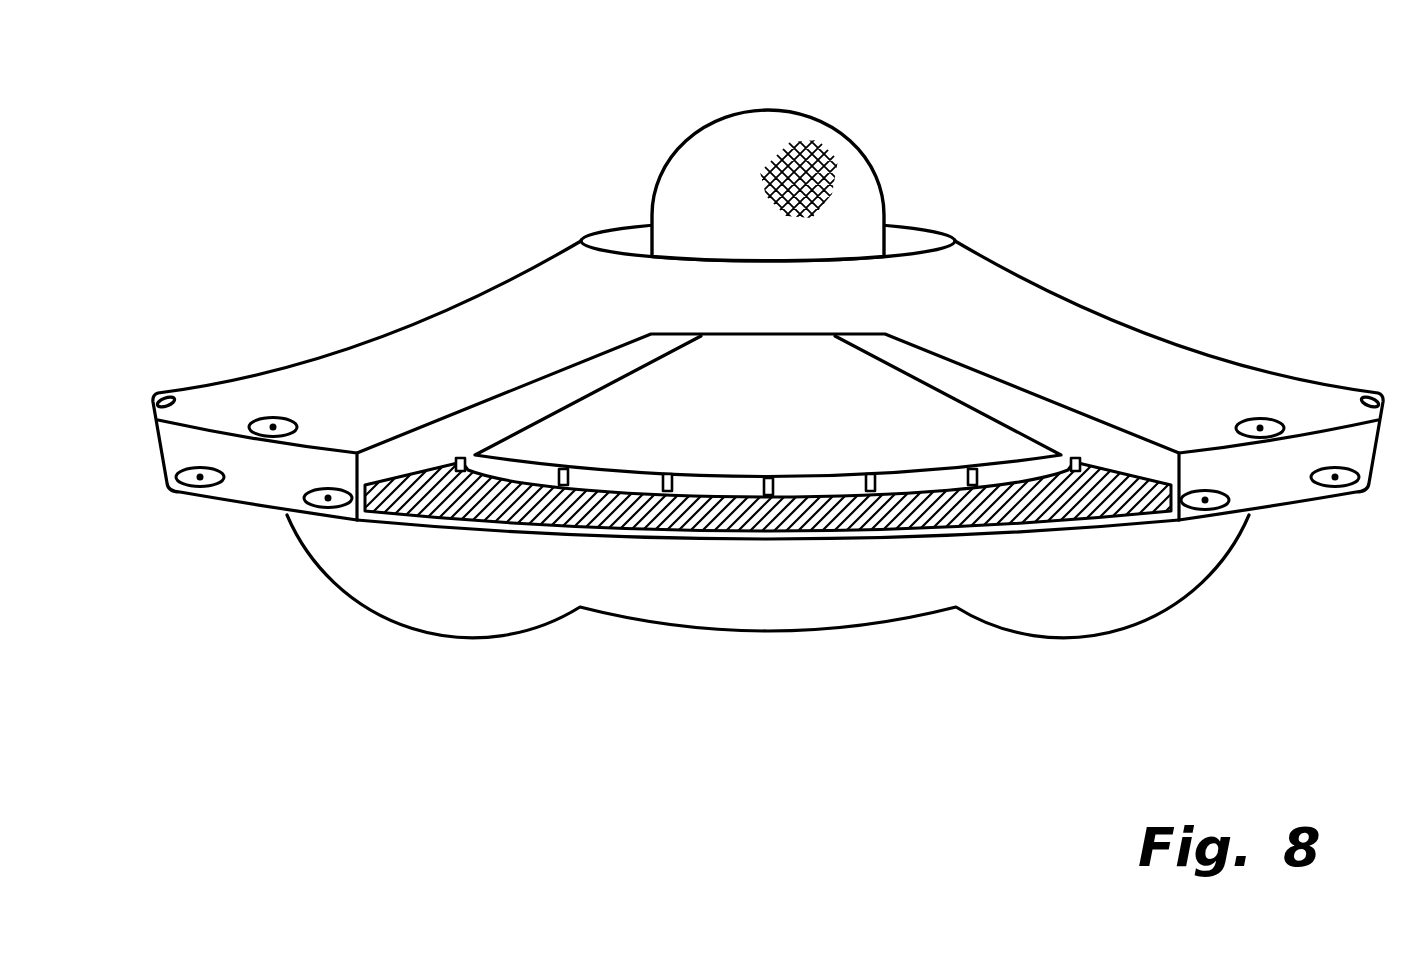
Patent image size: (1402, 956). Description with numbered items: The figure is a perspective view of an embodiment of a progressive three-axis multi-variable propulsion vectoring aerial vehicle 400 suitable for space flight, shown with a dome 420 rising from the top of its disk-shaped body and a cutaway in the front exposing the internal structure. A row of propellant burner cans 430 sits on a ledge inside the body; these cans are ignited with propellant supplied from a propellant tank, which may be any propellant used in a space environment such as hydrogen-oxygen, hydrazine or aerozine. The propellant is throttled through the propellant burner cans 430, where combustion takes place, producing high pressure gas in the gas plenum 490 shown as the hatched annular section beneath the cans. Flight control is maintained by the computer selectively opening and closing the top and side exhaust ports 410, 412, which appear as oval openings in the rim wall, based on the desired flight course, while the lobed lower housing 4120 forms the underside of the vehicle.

The optical sensing assembly 400 is at (1010, 150).
The exhaust ports 410 is at (1277, 420).
The exhaust ports 412 is at (200, 480).
The dome cover 420 is at (826, 124).
The propellant burner cans 430 is at (562, 487).
The gas plenum 490 is at (1088, 507).
The lower housing lobes 4120 is at (1197, 583).